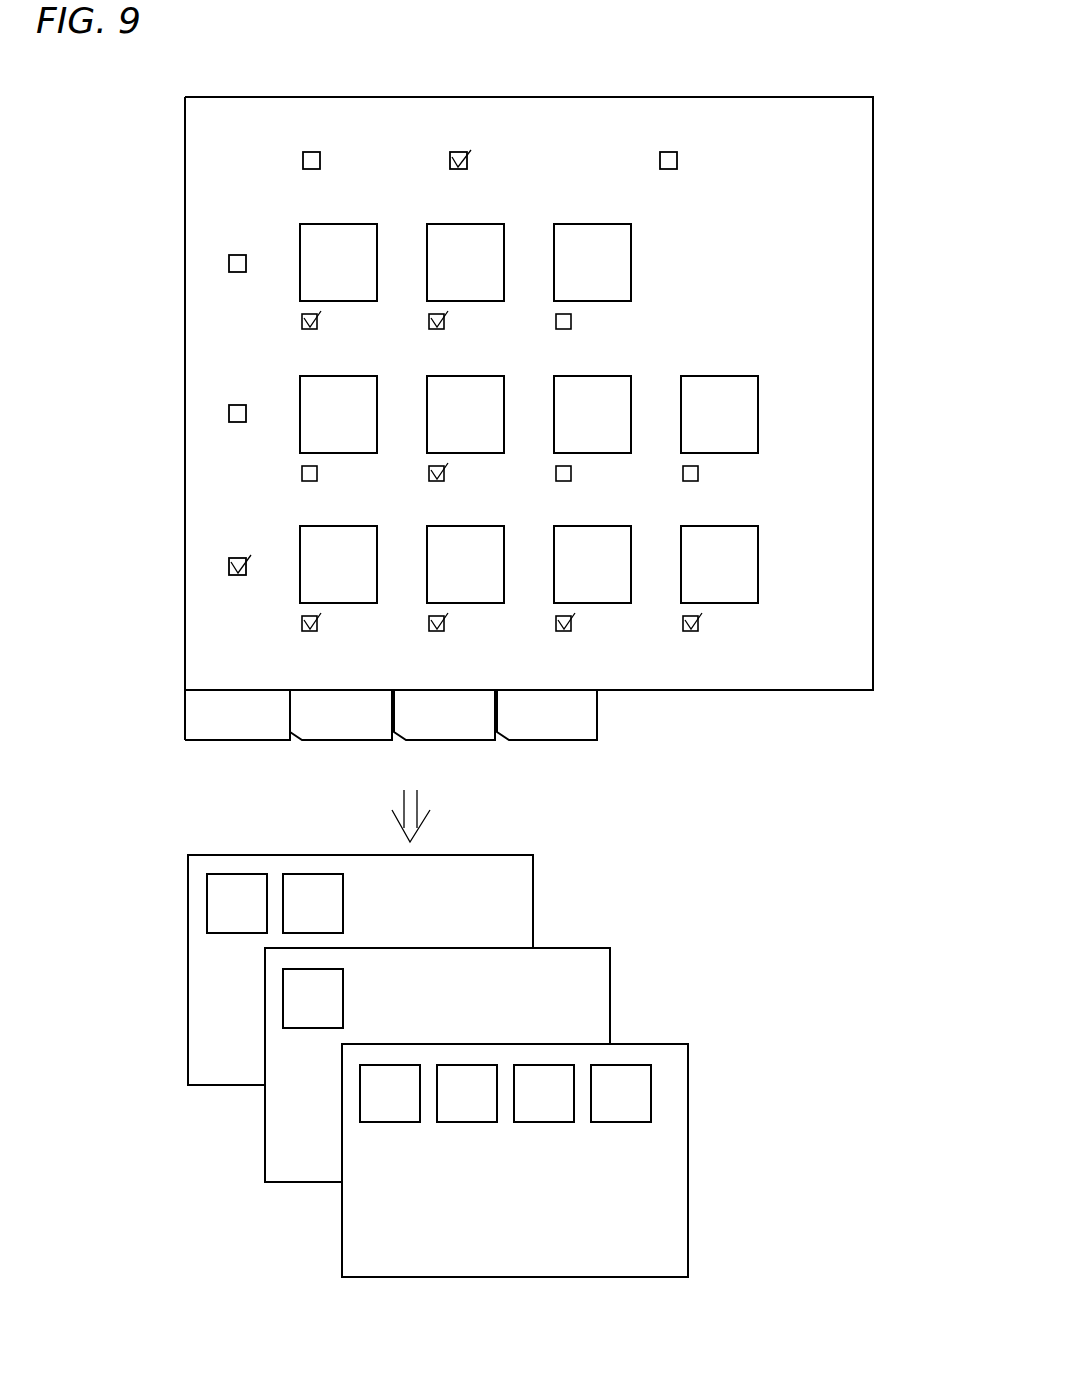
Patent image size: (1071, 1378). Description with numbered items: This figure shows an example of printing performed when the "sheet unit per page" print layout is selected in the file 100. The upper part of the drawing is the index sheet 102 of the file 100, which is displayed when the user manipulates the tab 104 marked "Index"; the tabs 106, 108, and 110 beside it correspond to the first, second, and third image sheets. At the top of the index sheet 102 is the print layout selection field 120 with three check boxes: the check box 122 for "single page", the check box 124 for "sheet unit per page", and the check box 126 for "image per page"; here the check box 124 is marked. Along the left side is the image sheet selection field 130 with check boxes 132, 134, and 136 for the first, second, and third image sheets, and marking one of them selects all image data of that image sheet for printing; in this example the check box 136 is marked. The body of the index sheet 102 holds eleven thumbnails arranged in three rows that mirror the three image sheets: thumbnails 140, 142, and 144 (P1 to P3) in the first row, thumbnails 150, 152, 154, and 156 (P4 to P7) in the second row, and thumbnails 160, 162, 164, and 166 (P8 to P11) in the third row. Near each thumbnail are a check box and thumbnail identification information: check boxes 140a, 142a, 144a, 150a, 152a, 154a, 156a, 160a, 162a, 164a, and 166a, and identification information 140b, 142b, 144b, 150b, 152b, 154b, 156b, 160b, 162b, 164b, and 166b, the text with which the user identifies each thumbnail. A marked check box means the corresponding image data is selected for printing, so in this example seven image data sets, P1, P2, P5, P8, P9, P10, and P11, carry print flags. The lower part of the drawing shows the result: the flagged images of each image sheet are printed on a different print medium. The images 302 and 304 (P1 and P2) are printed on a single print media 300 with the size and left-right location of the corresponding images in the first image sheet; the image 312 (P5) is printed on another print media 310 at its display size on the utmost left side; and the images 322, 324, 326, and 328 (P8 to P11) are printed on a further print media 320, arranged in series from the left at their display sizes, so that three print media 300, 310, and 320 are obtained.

The file 100 is at (792, 90).
The index sheet 102 is at (185, 125).
The tab 104 is at (239, 742).
The tab 106 is at (345, 742).
The tab 108 is at (447, 742).
The tab 110 is at (550, 742).
The print layout selection field 120 is at (539, 92).
The check box 122 is at (303, 162).
The check box 124 is at (456, 152).
The check box 126 is at (739, 111).
The image sheet selection field 130 is at (173, 404).
The check box 132 is at (229, 265).
The check box 134 is at (229, 415).
The check box 136 is at (200, 552).
The thumbnail 140 is at (377, 269).
The check box 140a is at (309, 329).
The thumbnail identification information 140b is at (355, 320).
The thumbnail 142 is at (504, 269).
The check box 142a is at (436, 329).
The thumbnail identification information 142b is at (482, 320).
The thumbnail 144 is at (631, 269).
The check box 144a is at (563, 329).
The thumbnail identification information 144b is at (609, 320).
The thumbnail 150 is at (377, 421).
The check box 150a is at (309, 481).
The thumbnail identification information 150b is at (355, 472).
The thumbnail 152 is at (504, 421).
The check box 152a is at (436, 481).
The thumbnail identification information 152b is at (482, 472).
The thumbnail 154 is at (631, 421).
The check box 154a is at (563, 481).
The thumbnail identification information 154b is at (609, 472).
The thumbnail 156 is at (758, 421).
The check box 156a is at (690, 481).
The thumbnail identification information 156b is at (736, 472).
The thumbnail 160 is at (377, 571).
The check box 160a is at (309, 631).
The thumbnail identification information 160b is at (355, 622).
The thumbnail 162 is at (504, 571).
The check box 162a is at (436, 631).
The thumbnail identification information 162b is at (482, 622).
The thumbnail 164 is at (631, 571).
The check box 164a is at (563, 631).
The thumbnail identification information 164b is at (621, 622).
The thumbnail 166 is at (758, 571).
The check box 166a is at (690, 631).
The thumbnail identification information 166b is at (748, 622).
The print media 300 is at (406, 970).
The image 302 is at (237, 935).
The image 304 is at (343, 899).
The print media 310 is at (484, 1065).
The image 312 is at (312, 1030).
The print media 320 is at (561, 1160).
The image 322 is at (391, 1124).
The image 324 is at (468, 1124).
The image 326 is at (545, 1124).
The image 328 is at (622, 1124).